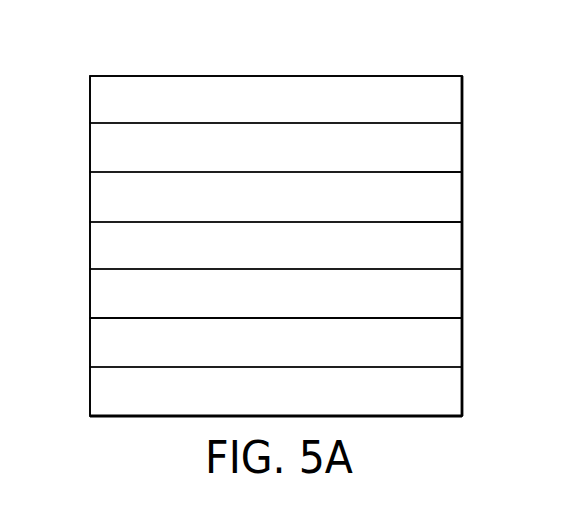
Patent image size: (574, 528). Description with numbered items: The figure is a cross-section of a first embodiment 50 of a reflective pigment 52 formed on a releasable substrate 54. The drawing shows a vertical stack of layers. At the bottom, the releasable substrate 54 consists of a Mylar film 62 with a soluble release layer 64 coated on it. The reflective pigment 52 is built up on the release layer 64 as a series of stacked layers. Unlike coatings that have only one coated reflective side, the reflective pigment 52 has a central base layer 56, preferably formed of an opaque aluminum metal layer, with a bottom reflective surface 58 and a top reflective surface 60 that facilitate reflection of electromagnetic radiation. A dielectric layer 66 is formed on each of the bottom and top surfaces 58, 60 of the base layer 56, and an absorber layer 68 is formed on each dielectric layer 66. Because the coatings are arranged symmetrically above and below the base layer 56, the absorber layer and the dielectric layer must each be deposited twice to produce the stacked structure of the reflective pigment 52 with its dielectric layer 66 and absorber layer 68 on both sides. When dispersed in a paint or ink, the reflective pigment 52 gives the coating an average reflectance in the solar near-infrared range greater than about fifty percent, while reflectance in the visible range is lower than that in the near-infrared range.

The first embodiment 50 is at (390, 49).
The reflective pigment 52 is at (69, 76).
The releasable substrate 54 is at (69, 318).
The base layer 56 is at (445, 200).
The bottom reflective surface 58 is at (427, 222).
The top reflective surface 60 is at (425, 172).
The Mylar film 62 is at (448, 396).
The soluble release layer 64 is at (452, 342).
The dielectric layer 66 is at (440, 135).
The absorber layer 68 is at (440, 97).